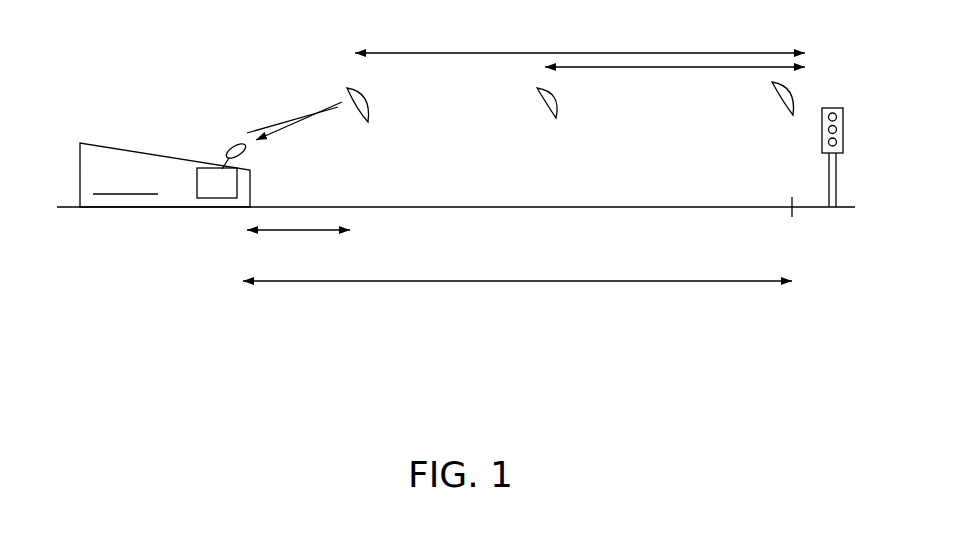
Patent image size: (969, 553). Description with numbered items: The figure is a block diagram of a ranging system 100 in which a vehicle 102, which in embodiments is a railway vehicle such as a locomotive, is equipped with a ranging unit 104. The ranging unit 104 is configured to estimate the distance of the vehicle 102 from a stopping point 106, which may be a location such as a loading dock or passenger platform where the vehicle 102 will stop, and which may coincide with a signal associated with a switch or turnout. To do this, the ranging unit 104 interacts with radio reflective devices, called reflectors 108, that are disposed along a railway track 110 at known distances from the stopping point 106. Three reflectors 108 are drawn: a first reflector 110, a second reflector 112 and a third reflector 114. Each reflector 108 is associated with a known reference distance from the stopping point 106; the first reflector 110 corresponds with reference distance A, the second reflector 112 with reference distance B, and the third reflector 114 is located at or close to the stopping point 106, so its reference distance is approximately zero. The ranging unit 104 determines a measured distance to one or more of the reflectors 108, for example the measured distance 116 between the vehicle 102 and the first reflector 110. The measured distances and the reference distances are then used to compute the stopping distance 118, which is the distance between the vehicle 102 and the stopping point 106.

The ranging system 100 is at (477, 441).
The vehicle 102 is at (105, 143).
The ranging unit 104 is at (202, 168).
The stopping point 106 is at (793, 226).
The reflectors 108 is at (370, 136).
The first reflector 110 is at (500, 208).
The second reflector 112 is at (561, 97).
The third reflector 114 is at (797, 93).
The measured distance 116 is at (287, 232).
The stopping distance 118 is at (512, 281).